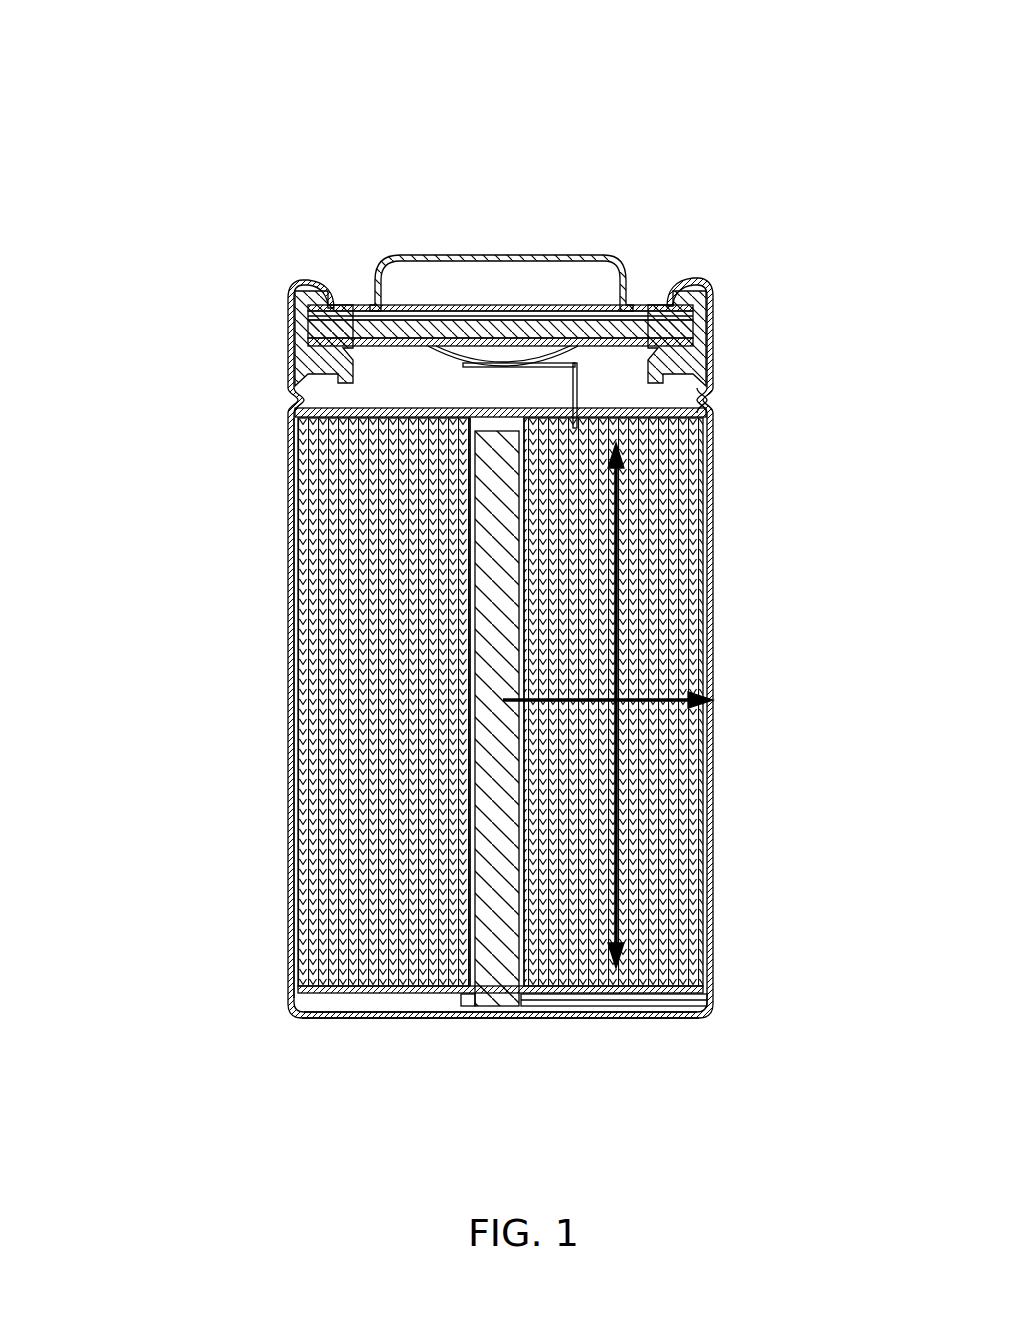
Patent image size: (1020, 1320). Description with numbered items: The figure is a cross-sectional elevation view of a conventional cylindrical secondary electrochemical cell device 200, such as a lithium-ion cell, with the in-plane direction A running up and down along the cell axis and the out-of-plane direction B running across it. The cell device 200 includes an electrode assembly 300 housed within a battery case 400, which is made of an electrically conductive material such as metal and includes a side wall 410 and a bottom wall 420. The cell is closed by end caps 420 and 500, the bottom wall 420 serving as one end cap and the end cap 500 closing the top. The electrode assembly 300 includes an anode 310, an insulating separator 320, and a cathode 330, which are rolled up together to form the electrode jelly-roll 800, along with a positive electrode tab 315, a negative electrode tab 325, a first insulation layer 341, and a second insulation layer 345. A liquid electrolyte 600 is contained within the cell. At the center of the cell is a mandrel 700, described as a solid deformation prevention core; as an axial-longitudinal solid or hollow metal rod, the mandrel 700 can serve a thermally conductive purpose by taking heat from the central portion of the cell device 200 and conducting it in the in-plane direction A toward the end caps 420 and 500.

The secondary electrochemical cell device 200 is at (303, 124).
The electrode assembly 300 is at (835, 375).
The anode 310 is at (700, 540).
The positive electrode tab 315 is at (690, 376).
The insulating separator 320 is at (690, 454).
The negative electrode tab 325 is at (590, 1006).
The cathode 330 is at (705, 500).
The first insulation layer 341 is at (700, 403).
The second insulation layer 345 is at (695, 988).
The battery case 400 is at (464, 657).
The side wall 410 is at (290, 452).
The bottom wall 420 is at (305, 1012).
The end cap 500 is at (456, 244).
The electrolyte 600 is at (458, 990).
The mandrel 700 is at (533, 1005).
The electrode jelly-roll 800 is at (345, 650).